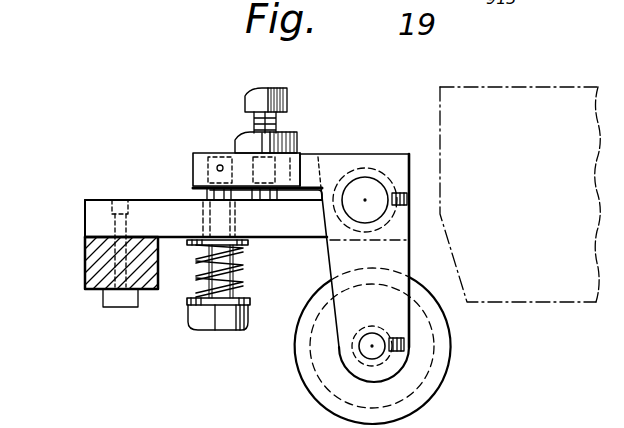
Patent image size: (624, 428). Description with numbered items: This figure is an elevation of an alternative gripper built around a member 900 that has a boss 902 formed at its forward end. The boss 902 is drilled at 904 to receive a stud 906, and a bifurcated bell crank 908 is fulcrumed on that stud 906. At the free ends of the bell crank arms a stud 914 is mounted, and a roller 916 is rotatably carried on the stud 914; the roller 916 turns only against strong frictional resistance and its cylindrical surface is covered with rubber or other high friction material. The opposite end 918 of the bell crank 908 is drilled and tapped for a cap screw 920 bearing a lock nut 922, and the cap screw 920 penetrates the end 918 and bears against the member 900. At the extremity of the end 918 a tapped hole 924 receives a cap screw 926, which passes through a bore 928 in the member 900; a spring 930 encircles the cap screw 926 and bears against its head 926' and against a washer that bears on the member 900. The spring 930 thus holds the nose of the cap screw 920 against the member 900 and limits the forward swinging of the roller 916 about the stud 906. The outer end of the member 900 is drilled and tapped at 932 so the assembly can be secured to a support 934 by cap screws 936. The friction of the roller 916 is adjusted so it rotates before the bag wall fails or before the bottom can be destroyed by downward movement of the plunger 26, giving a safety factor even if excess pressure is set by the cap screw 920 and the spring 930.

The plunger 26 is at (442, 211).
The member 900 is at (84, 213).
The boss 902 is at (333, 153).
The drilled hole 904 is at (384, 177).
The stud 906 is at (377, 193).
The bell crank 908 is at (293, 162).
The stud 914 is at (377, 354).
The roller 916 is at (444, 357).
The opposite end of bell crank 918 is at (200, 160).
The cap screw 920 is at (250, 98).
The lock nut 922 is at (243, 138).
The tapped hole 924 is at (207, 170).
The cap screw 926 is at (226, 194).
The head of cap screw 926' is at (218, 329).
The bore 928 is at (236, 226).
The spring 930 is at (233, 264).
The drilled and tapped hole 932 is at (111, 210).
The support 934 is at (85, 276).
The cap screws 936 is at (117, 299).